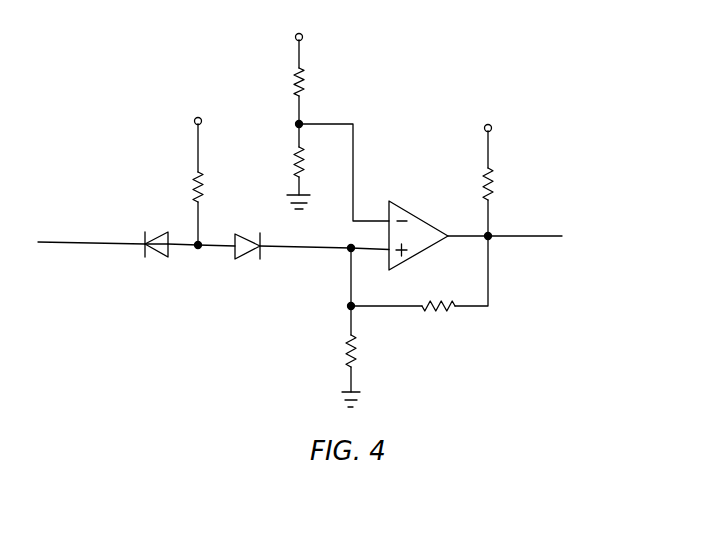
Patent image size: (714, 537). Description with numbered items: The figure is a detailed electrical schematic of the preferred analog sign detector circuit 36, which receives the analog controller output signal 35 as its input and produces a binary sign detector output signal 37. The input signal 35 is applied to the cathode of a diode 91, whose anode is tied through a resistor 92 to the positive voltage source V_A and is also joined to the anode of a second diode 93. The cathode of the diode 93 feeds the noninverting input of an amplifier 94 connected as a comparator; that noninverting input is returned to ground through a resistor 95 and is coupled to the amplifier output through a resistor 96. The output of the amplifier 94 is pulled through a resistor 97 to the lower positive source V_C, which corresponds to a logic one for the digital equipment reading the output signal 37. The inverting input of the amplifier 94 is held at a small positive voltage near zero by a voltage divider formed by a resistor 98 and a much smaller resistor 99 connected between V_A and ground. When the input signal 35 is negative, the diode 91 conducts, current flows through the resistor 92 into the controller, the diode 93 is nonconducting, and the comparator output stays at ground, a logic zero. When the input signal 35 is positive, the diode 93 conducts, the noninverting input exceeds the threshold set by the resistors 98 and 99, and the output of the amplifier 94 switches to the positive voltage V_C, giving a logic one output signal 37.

The analog controller output signal 35 is at (83, 243).
The sign detector circuit 36 is at (105, 160).
The sign detector output signal 37 is at (505, 233).
The diode 91 is at (158, 258).
The resistor 92 is at (205, 191).
The diode 93 is at (245, 260).
The amplifier 94 is at (398, 202).
The resistor 95 is at (344, 345).
The resistor 96 is at (436, 312).
The resistor 97 is at (495, 176).
The resistor 98 is at (302, 72).
The resistor 99 is at (284, 162).